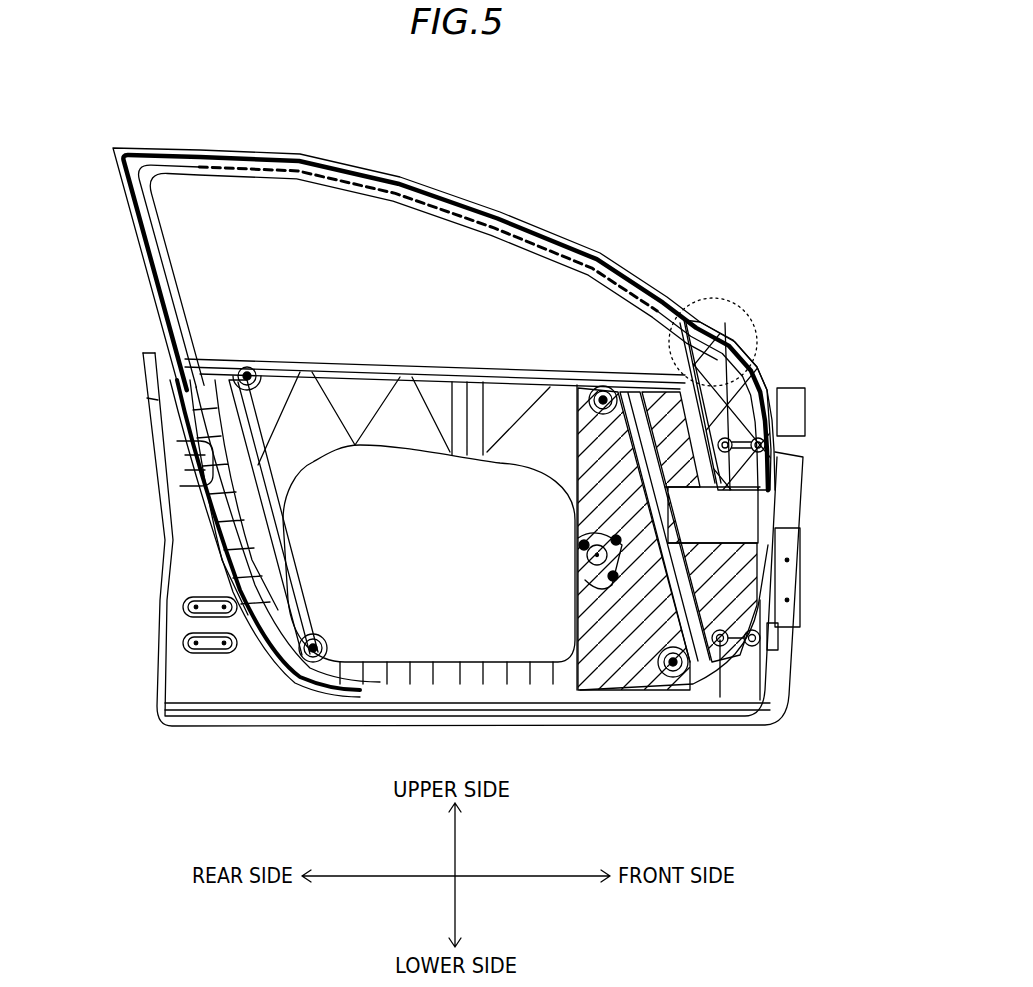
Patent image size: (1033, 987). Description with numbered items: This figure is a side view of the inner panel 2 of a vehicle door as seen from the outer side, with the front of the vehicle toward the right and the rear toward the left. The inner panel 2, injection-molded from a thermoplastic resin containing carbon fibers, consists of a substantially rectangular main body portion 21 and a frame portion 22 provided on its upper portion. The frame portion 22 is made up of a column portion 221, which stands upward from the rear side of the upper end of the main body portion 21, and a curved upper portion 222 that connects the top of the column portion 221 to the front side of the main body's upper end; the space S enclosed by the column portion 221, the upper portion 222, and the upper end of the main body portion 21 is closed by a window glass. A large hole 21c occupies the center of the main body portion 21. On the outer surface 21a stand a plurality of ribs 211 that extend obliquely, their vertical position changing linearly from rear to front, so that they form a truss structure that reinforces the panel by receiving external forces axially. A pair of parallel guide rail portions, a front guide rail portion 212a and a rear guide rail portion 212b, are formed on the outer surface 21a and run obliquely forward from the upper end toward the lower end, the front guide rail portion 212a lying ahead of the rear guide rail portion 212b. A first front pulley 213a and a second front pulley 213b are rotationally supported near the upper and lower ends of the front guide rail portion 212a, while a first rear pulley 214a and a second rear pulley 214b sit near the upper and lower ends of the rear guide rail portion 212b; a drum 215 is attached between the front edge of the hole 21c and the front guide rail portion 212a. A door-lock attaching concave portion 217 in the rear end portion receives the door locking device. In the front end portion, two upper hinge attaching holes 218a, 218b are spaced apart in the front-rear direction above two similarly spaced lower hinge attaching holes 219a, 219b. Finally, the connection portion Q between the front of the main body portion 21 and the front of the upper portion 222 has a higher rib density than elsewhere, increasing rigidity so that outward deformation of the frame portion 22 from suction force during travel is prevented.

The inner panel 2 is at (656, 169).
The main body portion 21 is at (120, 528).
The outer surface 21a is at (397, 433).
The hole 21c is at (446, 563).
The frame portion 22 is at (106, 273).
The column portion 221 is at (128, 232).
The upper portion 222 is at (445, 188).
The ribs 211 is at (377, 398).
The front guide rail portion 212a is at (622, 395).
The rear guide rail portion 212b is at (226, 372).
The first front pulley 213a is at (588, 392).
The second front pulley 213b is at (668, 674).
The first rear pulley 214a is at (262, 362).
The second rear pulley 214b is at (316, 640).
The drum 215 is at (580, 546).
The door-lock attaching concave portion 217 is at (185, 478).
The upper hinge attaching hole 218a is at (766, 445).
The upper hinge attaching hole 218b is at (767, 395).
The lower hinge attaching hole 219a is at (768, 636).
The lower hinge attaching hole 219b is at (731, 648).
The space S is at (414, 294).
The connection portion Q is at (716, 322).